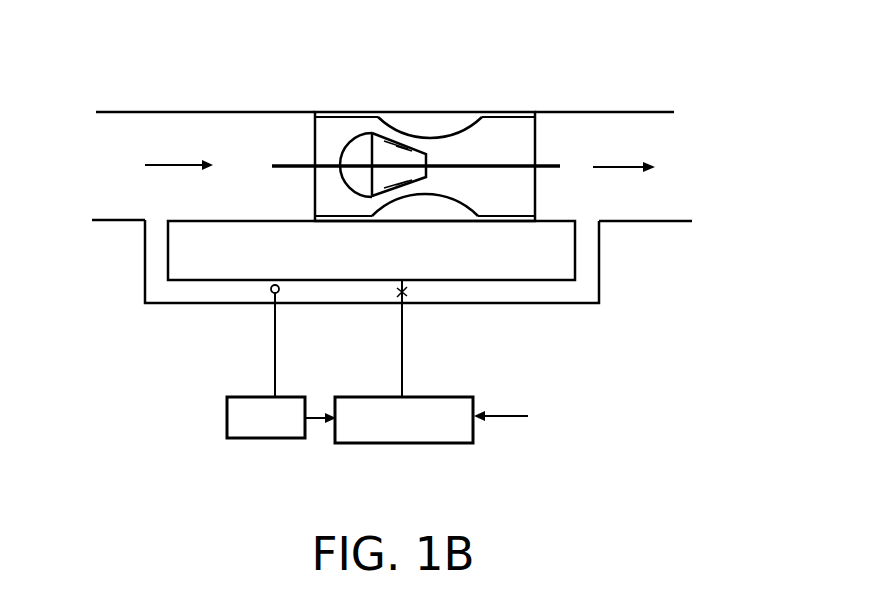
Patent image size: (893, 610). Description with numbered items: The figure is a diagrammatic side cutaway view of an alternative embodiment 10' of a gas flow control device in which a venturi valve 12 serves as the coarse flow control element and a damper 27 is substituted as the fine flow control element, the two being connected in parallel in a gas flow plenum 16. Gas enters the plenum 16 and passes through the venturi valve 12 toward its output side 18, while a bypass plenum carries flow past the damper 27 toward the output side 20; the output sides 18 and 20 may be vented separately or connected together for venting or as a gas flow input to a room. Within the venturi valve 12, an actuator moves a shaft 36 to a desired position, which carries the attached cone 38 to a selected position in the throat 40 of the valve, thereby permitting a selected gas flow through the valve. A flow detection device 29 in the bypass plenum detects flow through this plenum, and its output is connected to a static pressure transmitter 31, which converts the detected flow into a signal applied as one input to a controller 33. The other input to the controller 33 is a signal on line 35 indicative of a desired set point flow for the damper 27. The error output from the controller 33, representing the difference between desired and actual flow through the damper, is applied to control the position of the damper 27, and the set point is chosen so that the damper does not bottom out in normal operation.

The alternative embodiment of gas flow control device 10' is at (400, 88).
The gas flow plenum 16 is at (208, 120).
The output side 18 is at (579, 120).
The venturi valve 12 is at (337, 125).
The throat 40 is at (443, 131).
The shaft 36 is at (289, 165).
The cone 38 is at (390, 147).
The output side 20 is at (509, 290).
The flow detection device 29 is at (278, 285).
The damper 27 is at (405, 287).
The static pressure transmitter 31 is at (250, 396).
The controller 33 is at (353, 396).
The line 35 is at (512, 417).